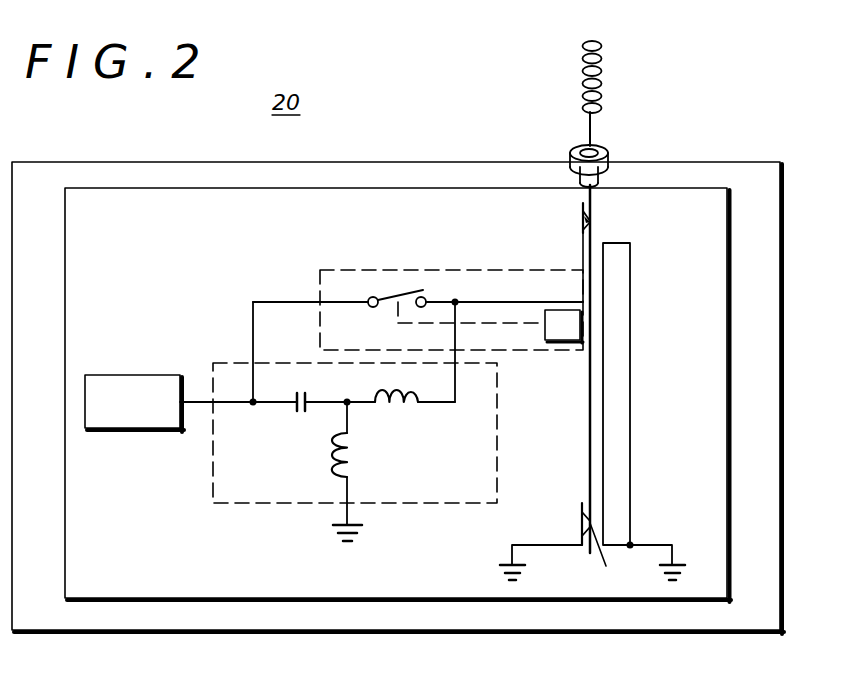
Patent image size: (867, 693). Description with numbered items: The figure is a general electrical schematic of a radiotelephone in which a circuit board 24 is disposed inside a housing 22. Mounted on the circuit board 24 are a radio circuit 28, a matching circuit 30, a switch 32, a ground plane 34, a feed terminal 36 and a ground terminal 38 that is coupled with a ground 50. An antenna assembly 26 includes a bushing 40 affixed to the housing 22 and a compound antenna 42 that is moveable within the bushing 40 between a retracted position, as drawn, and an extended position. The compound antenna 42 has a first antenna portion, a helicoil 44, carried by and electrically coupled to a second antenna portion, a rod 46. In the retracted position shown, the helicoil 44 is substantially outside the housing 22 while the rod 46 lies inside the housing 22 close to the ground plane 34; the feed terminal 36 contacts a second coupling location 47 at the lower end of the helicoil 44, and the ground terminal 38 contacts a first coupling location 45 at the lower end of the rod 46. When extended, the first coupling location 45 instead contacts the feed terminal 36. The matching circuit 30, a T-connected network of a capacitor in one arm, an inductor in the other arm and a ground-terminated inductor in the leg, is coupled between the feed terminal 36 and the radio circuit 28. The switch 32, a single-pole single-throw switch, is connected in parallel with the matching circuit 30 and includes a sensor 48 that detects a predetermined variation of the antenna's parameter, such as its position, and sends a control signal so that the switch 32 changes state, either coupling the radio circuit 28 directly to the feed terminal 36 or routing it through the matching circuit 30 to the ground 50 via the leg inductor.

The housing 22 is at (782, 382).
The circuit board 24 is at (729, 396).
The antenna assembly 26 is at (605, 93).
The radio circuit 28 is at (133, 374).
The matching circuit 30 is at (213, 470).
The switch 32 is at (392, 268).
The ground plane 34 is at (618, 394).
The feed terminal 36 is at (580, 213).
The ground terminal 38 is at (582, 506).
The bushing 40 is at (610, 151).
The compound antenna 42 is at (570, 115).
The helicoil 44 is at (582, 64).
The first coupling location 45 is at (607, 558).
The rod 46 is at (588, 427).
The second coupling location 47 is at (594, 223).
The sensor 48 is at (558, 343).
The ground 50 is at (500, 573).